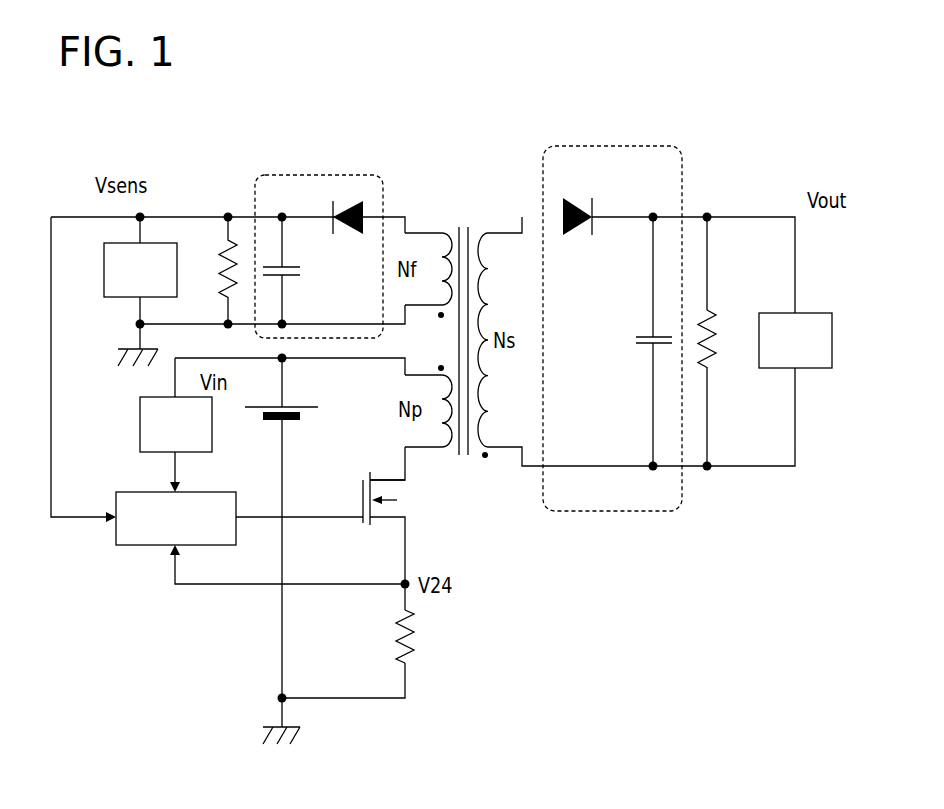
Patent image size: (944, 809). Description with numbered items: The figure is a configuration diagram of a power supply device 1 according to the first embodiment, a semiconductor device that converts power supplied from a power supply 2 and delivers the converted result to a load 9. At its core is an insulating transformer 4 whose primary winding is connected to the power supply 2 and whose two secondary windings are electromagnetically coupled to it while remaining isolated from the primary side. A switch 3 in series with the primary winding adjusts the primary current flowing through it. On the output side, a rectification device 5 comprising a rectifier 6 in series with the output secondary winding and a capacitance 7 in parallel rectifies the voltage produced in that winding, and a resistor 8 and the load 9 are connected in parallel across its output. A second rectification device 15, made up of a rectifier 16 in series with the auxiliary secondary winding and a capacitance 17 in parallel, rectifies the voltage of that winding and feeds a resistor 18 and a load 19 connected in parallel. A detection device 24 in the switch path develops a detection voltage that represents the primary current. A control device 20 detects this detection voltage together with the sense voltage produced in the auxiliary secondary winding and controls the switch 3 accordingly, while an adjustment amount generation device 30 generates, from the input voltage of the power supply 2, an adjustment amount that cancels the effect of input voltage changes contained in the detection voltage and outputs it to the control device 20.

The power supply device 1 is at (427, 100).
The power supply 2 is at (290, 423).
The switch 3 is at (407, 511).
The insulating transformer 4 is at (463, 227).
The rectification device 5 is at (620, 146).
The rectifier 6 is at (577, 203).
The capacitance 7 is at (645, 346).
The resistor 8 is at (717, 322).
The load 9 is at (812, 313).
The rectification device 15 is at (314, 175).
The rectifier 16 is at (340, 228).
The capacitance 17 is at (290, 278).
The resistor 18 is at (222, 290).
The load 19 is at (115, 300).
The control device 20 is at (138, 546).
The detection device 24 is at (415, 636).
The adjustment amount generation device 30 is at (140, 425).